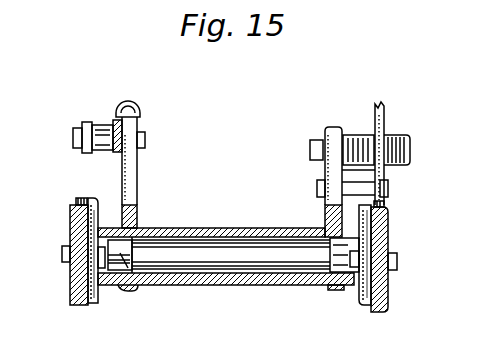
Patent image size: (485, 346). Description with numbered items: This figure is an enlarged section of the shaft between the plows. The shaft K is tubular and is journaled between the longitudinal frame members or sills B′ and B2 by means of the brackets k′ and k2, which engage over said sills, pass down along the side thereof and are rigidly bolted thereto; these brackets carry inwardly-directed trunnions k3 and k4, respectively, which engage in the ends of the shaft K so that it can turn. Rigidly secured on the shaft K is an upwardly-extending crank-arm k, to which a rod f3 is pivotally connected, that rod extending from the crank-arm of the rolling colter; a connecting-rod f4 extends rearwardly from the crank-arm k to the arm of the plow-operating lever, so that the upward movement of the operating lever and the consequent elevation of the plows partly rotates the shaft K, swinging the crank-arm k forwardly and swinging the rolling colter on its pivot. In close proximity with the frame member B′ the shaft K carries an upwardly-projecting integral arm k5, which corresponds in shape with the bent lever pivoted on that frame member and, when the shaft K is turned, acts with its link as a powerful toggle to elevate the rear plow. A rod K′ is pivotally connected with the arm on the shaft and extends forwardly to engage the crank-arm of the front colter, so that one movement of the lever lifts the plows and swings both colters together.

The shaft K is at (228, 227).
The crank-arm k is at (137, 178).
The rod f3 is at (85, 124).
The connecting-rod f4 is at (122, 130).
The frame member B′ is at (70, 212).
The bracket k′ is at (98, 300).
The trunnion k3 is at (139, 287).
The trunnion k4 is at (338, 256).
The bracket k2 is at (364, 294).
The frame member B2 is at (385, 242).
The arm k5 is at (323, 210).
The rod K′ is at (360, 133).